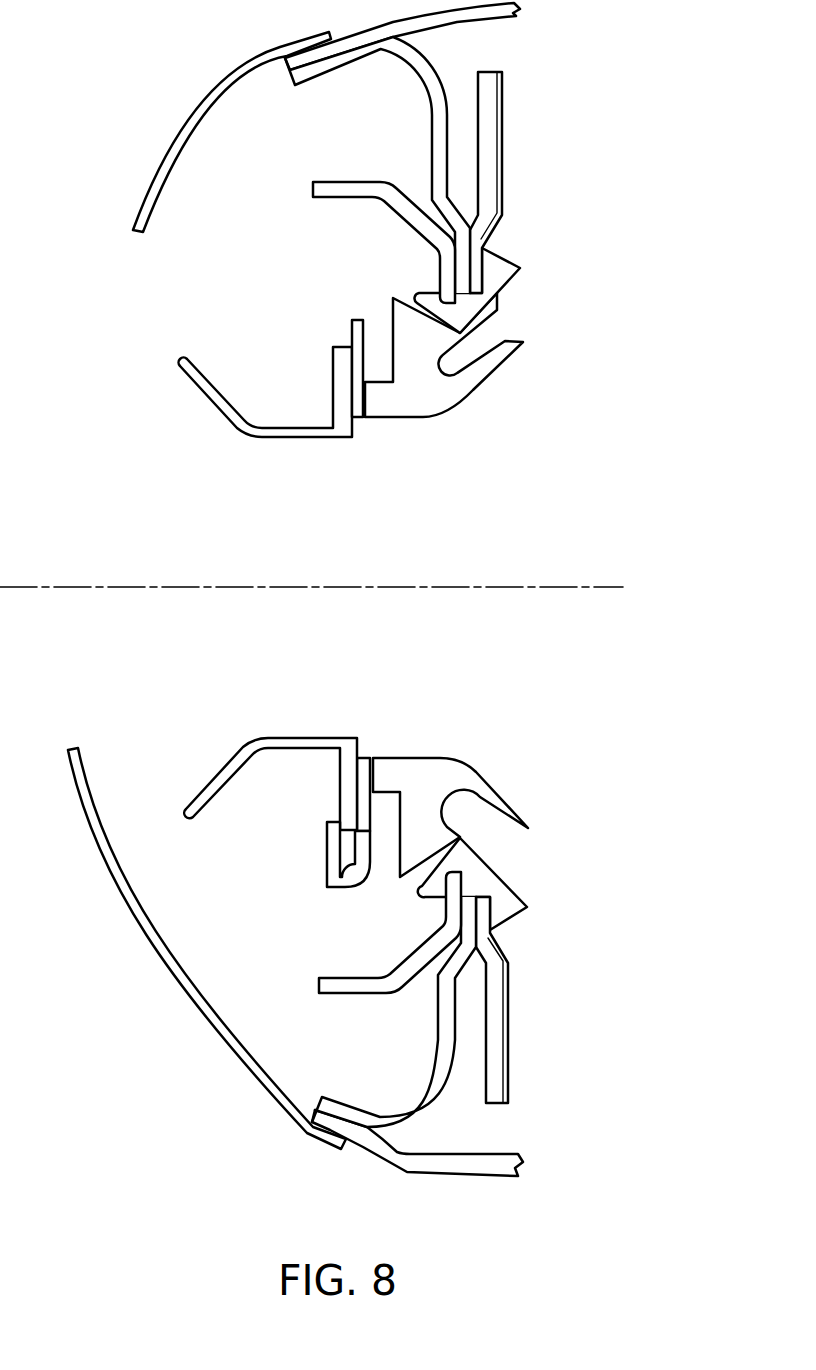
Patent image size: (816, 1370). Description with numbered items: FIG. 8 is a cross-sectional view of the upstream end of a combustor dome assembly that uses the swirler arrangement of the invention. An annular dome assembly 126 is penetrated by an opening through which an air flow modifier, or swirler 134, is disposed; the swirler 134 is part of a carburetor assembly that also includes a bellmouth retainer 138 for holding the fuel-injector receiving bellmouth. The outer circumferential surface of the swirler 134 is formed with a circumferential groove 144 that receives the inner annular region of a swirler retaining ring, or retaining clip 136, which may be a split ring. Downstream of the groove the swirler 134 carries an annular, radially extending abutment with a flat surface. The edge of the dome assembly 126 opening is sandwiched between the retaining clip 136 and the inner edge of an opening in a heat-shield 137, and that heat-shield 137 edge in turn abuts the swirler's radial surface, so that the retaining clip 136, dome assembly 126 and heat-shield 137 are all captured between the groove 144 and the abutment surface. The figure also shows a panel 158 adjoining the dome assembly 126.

The annular dome assembly 126 is at (430, 78).
The air flow modifier (swirler) 134 is at (427, 410).
The swirler retaining ring (retaining clip) 136 is at (397, 217).
The heat-shield 137 is at (493, 160).
The bellmouth retainer 138 is at (327, 850).
The circumferential groove 144 is at (459, 303).
The panel 158 is at (370, 1152).